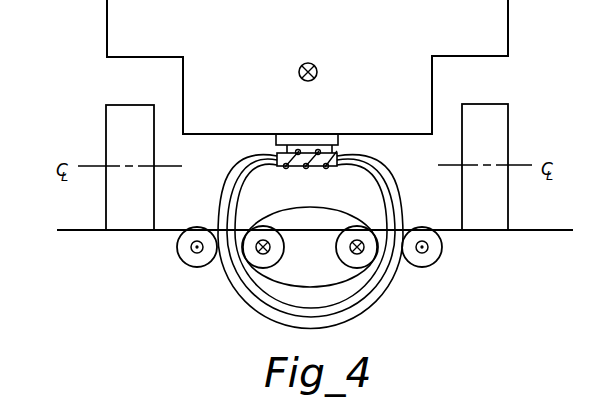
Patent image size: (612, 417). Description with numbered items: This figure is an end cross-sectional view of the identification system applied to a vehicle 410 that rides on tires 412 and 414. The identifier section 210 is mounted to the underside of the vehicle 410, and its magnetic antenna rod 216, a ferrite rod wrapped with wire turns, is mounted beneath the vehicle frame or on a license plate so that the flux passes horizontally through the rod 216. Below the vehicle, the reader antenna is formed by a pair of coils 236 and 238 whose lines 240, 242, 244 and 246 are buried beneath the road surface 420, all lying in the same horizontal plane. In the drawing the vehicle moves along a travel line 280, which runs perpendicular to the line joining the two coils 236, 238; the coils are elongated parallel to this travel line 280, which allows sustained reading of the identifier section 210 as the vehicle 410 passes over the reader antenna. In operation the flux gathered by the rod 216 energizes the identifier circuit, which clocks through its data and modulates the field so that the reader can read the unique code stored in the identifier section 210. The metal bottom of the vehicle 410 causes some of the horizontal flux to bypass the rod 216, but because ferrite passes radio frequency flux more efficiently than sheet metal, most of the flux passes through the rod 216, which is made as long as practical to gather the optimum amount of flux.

The vehicle 410 is at (330, 29).
The travel line 280 is at (317, 70).
The identifier section 210 is at (293, 134).
The magnetic antenna rod 216 is at (340, 152).
The tire 412 is at (148, 134).
The tire 414 is at (503, 133).
The road surface 420 is at (146, 234).
The line 240 is at (191, 249).
The line 242 is at (256, 254).
The line 244 is at (365, 253).
The line 246 is at (430, 247).
The coil 236 is at (197, 254).
The coil 238 is at (358, 255).